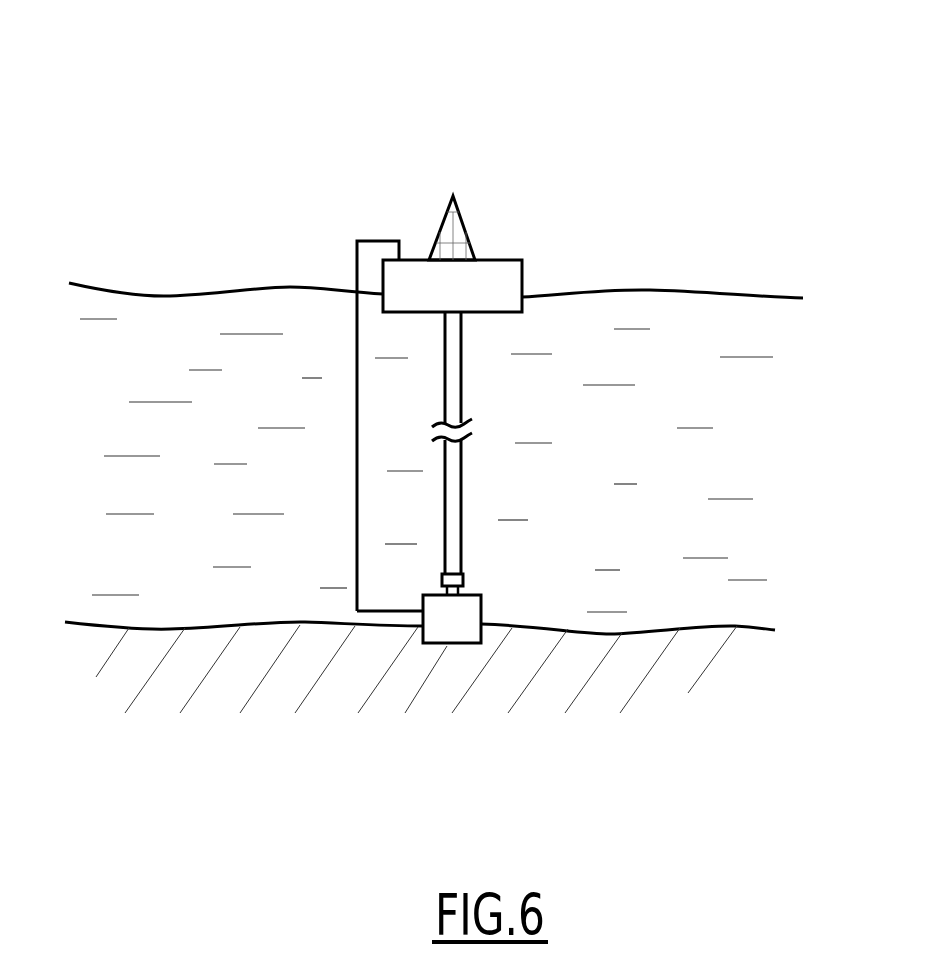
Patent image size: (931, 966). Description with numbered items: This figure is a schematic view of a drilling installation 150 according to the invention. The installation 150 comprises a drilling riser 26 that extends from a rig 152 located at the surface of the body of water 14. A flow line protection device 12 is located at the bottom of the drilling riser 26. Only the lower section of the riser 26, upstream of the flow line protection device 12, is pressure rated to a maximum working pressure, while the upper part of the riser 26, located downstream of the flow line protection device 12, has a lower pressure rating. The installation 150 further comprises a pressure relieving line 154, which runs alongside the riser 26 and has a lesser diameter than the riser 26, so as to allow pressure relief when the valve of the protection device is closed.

The installation 150 is at (500, 100).
The rig 152 is at (463, 223).
The body of water 14 is at (436, 447).
The drilling riser 26 is at (462, 375).
The pressure relieving line 154 is at (357, 521).
The flow line protection device 12 is at (463, 582).